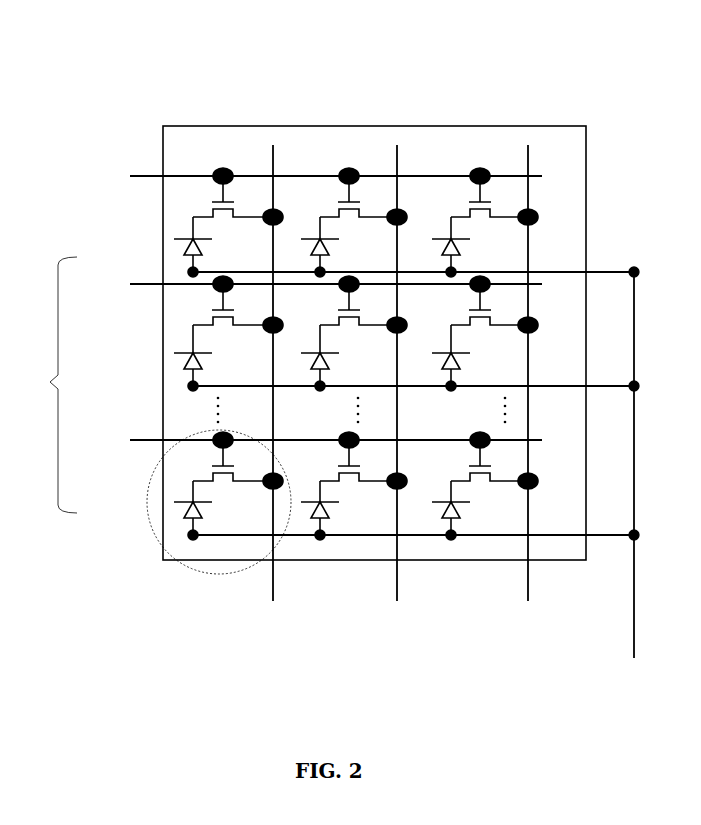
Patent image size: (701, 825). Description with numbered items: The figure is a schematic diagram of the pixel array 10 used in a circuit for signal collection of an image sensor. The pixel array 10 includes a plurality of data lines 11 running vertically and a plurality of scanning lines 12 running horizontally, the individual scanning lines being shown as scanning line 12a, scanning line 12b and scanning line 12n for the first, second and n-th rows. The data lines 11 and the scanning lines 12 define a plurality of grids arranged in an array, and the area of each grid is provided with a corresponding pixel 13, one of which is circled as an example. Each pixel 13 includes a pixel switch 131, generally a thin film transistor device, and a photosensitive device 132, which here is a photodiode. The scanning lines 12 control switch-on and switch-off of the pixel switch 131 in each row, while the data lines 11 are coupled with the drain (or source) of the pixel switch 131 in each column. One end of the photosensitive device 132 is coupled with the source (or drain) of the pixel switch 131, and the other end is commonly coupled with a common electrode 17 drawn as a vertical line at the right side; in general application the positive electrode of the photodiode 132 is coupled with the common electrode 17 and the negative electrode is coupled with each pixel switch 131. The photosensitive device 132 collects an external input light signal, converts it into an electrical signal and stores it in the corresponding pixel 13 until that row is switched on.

The pixel array 10 is at (382, 74).
The data lines 11 is at (272, 592).
The scanning lines 12 is at (284, 350).
The scanning line 12a is at (140, 177).
The scanning line 12b is at (140, 285).
The scanning line 12n is at (140, 441).
The pixel 13 is at (188, 524).
The pixel switch 131 is at (203, 463).
The photosensitive device 132 is at (175, 517).
The common electrode 17 is at (630, 635).